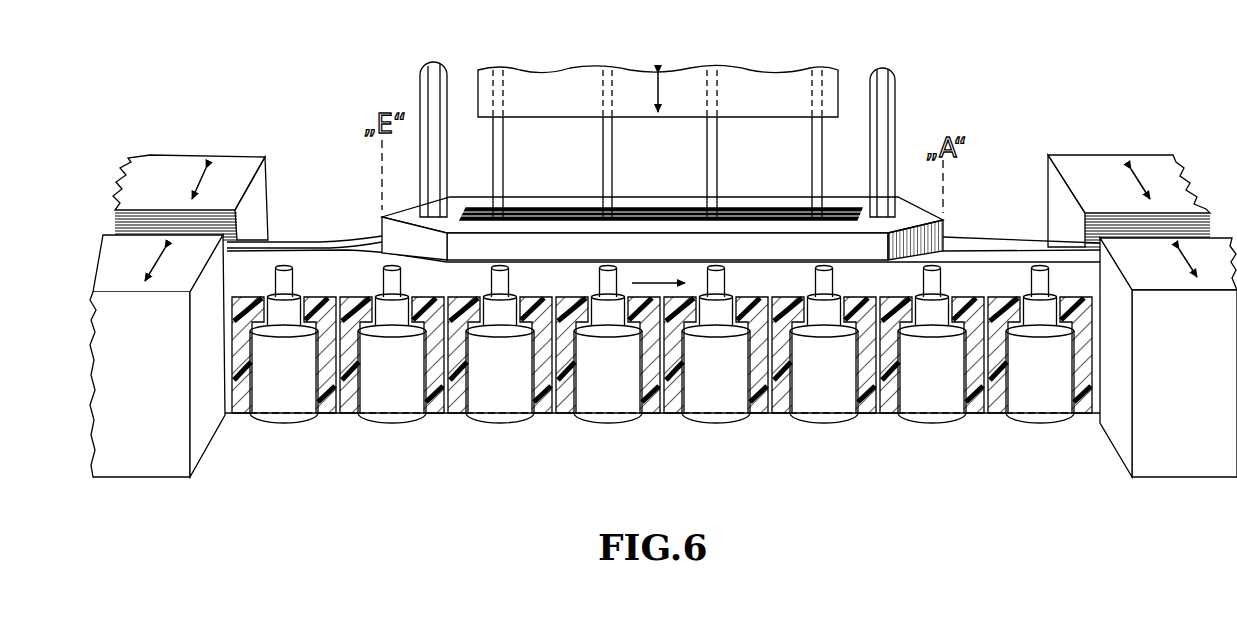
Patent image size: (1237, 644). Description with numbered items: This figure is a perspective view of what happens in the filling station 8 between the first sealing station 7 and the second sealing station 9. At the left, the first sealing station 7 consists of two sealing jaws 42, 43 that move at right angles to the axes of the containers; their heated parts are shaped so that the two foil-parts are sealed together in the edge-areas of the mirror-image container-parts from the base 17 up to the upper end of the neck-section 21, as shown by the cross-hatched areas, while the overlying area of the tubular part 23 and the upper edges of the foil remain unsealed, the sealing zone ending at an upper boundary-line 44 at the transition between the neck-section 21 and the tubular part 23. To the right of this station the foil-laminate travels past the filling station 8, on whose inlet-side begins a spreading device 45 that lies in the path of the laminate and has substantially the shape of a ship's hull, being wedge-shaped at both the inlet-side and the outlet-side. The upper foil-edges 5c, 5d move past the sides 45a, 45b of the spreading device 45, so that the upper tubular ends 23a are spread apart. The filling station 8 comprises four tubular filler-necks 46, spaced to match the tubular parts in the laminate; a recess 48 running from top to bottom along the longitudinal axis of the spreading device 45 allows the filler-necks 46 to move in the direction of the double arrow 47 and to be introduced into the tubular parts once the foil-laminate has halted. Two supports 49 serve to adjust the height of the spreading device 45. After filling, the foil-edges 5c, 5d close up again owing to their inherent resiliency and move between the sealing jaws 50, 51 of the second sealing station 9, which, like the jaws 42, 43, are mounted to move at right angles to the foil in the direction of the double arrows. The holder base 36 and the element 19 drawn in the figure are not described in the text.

The upper edge of foil 5c is at (742, 257).
The upper edge of foil 5d is at (362, 236).
The first sealing station 7 is at (173, 113).
The filling station 8 is at (755, 47).
The second sealing station 9 is at (1063, 115).
The base 17 is at (284, 402).
The container 19 is at (297, 408).
The neck-section 21 is at (291, 316).
The tubular part 23 is at (276, 280).
The upper tubular end 23a is at (818, 276).
The holder base plate 36 is at (660, 414).
The sealing jaw 42 is at (200, 447).
The sealing jaw 43 is at (230, 168).
The upper boundary-line 44 is at (327, 292).
The spreading device 45 is at (662, 200).
The side of spreading device 45a is at (630, 242).
The side of spreading device 45b is at (680, 198).
The tubular filler-neck 46 is at (505, 140).
The double arrow 47 is at (662, 92).
The recess 48 is at (775, 205).
The support 49 is at (422, 82).
The sealing jaw 50 is at (1123, 443).
The sealing jaw 51 is at (1157, 162).